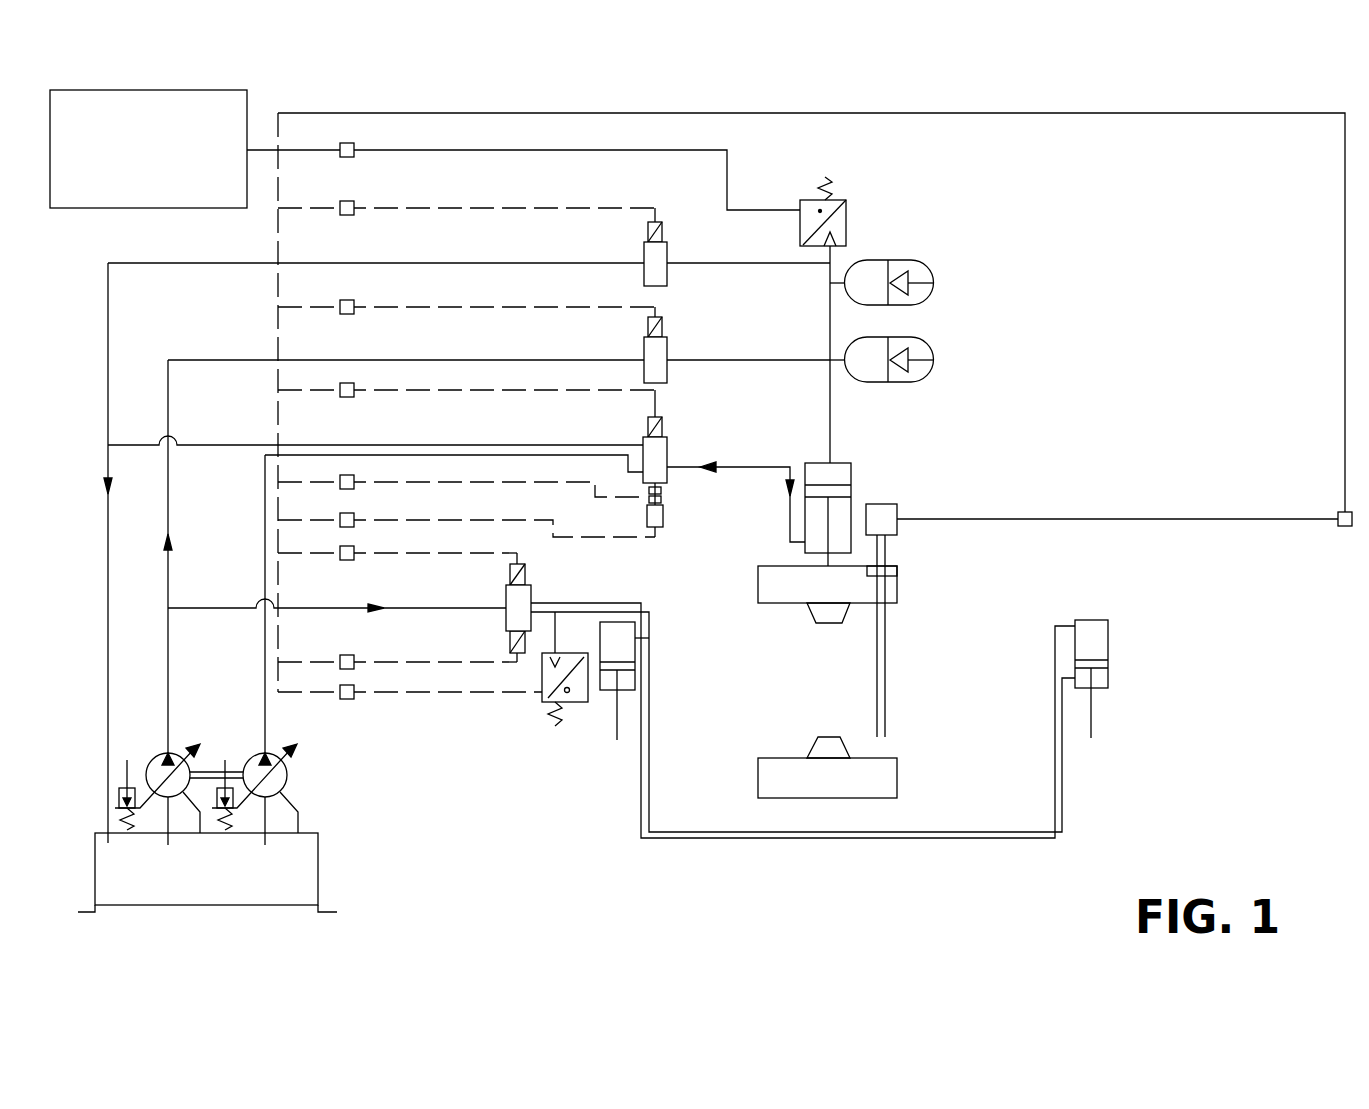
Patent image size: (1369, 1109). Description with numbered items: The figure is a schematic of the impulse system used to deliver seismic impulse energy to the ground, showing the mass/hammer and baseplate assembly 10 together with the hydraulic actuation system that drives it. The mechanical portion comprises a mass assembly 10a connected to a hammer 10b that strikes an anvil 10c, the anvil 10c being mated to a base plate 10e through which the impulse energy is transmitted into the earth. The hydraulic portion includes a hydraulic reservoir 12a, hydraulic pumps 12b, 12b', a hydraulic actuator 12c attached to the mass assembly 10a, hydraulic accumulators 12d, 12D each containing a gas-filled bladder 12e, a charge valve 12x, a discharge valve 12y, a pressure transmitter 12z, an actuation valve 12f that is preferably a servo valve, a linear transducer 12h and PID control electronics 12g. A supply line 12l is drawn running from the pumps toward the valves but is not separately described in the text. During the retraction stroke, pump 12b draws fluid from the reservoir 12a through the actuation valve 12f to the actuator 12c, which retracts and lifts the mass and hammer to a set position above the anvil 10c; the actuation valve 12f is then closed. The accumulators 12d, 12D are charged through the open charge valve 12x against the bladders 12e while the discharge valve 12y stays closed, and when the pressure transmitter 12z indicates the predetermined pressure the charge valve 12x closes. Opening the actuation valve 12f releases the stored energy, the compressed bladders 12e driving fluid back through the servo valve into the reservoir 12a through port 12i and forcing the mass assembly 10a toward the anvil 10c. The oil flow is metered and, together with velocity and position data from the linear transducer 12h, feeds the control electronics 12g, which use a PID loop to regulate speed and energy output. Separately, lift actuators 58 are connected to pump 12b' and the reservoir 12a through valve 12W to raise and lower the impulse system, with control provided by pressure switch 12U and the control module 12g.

The mass/hammer and baseplate assembly 10 is at (738, 741).
The mass assembly 10a is at (863, 588).
The hammer 10b is at (843, 613).
The anvil 10c is at (828, 737).
The base plate 10e is at (887, 786).
The hydraulic reservoir 12a is at (268, 883).
The hydraulic pump 12b is at (244, 853).
The hydraulic pump 12b' is at (150, 853).
The hydraulic actuator 12c is at (843, 511).
The hydraulic accumulator 12d is at (873, 270).
The hydraulic accumulator 12D is at (868, 368).
The gas-filled bladder 12e is at (918, 276).
The actuation valve 12f is at (667, 453).
The PID control electronics 12g is at (153, 203).
The linear transducer 12h is at (892, 568).
The port 12i is at (643, 437).
The hydraulic supply line 12l is at (108, 647).
The pressure switch 12U is at (542, 694).
The valve 12W is at (531, 594).
The charge valve 12x is at (667, 373).
The discharge valve 12y is at (667, 278).
The pressure transmitter 12z is at (840, 200).
The lift actuators 58 is at (632, 678).